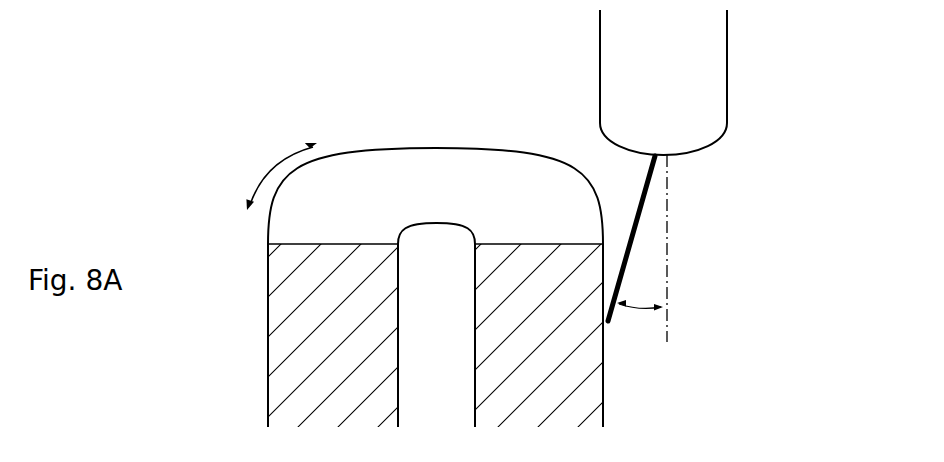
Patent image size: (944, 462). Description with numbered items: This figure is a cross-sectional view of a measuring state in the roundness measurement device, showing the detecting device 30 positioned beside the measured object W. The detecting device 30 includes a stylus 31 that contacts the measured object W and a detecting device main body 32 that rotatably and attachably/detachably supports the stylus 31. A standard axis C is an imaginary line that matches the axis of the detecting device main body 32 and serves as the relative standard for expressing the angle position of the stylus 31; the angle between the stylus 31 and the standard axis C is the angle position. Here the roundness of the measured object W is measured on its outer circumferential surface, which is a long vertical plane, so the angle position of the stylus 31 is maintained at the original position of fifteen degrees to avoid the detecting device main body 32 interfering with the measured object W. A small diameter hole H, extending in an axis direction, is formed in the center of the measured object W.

The detecting device 30 is at (731, 165).
The stylus 31 is at (640, 213).
The detecting device main body 32 is at (728, 85).
The measured object W is at (268, 366).
The hole H is at (433, 236).
The standard axis C is at (667, 263).